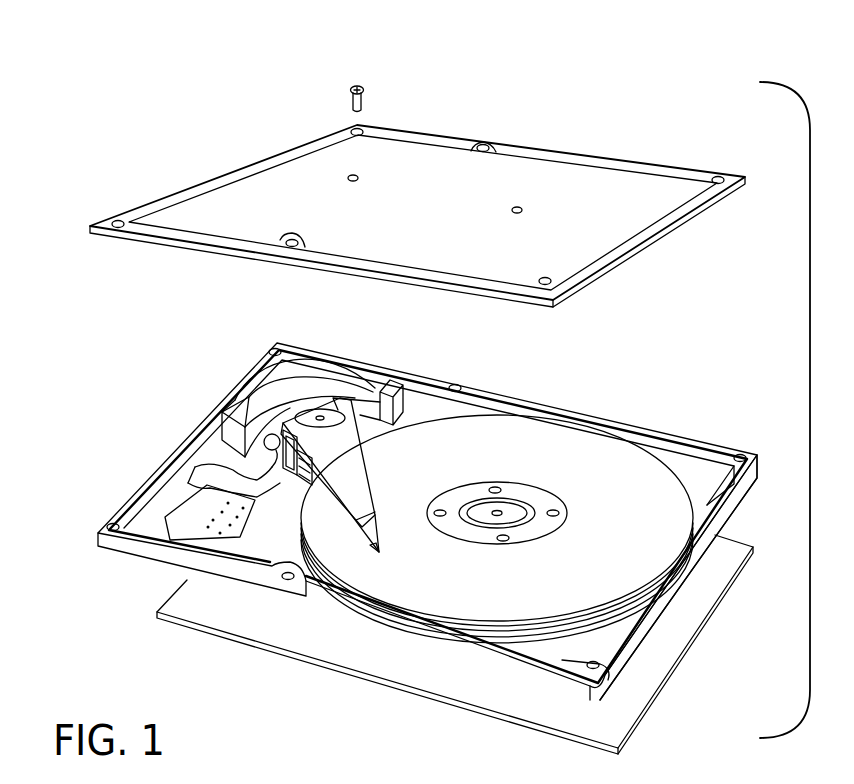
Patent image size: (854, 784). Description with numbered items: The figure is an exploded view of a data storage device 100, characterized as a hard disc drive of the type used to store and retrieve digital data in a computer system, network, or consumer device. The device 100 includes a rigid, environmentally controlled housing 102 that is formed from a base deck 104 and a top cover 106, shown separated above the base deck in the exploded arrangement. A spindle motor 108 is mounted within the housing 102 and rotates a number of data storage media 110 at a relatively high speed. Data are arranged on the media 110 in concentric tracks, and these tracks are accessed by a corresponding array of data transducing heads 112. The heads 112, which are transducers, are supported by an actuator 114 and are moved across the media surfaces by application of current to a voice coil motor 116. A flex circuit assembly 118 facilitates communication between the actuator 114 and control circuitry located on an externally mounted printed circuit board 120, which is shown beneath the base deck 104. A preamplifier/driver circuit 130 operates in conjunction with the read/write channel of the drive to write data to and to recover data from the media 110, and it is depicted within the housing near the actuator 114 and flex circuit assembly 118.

The data storage device 100 is at (148, 130).
The housing 102 is at (140, 342).
The base deck 104 is at (670, 600).
The top cover 106 is at (513, 165).
The spindle motor 108 is at (513, 505).
The data storage media 110 is at (533, 620).
The data transducing heads 112 is at (395, 555).
The actuator 114 is at (357, 482).
The voice coil motor 116 is at (300, 385).
The flex circuit assembly 118 is at (217, 473).
The printed circuit board 120 is at (243, 637).
The preamplifier/driver circuit 130 is at (293, 463).